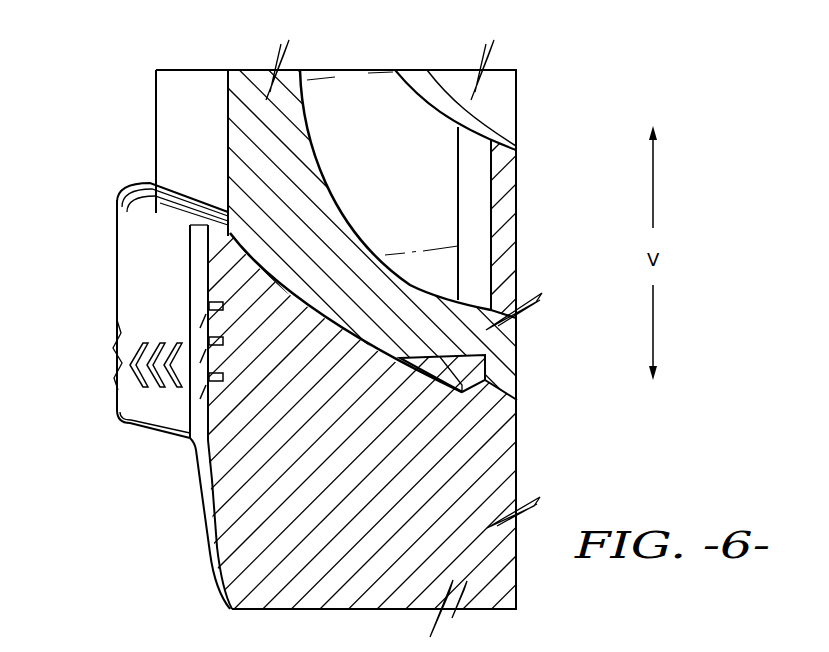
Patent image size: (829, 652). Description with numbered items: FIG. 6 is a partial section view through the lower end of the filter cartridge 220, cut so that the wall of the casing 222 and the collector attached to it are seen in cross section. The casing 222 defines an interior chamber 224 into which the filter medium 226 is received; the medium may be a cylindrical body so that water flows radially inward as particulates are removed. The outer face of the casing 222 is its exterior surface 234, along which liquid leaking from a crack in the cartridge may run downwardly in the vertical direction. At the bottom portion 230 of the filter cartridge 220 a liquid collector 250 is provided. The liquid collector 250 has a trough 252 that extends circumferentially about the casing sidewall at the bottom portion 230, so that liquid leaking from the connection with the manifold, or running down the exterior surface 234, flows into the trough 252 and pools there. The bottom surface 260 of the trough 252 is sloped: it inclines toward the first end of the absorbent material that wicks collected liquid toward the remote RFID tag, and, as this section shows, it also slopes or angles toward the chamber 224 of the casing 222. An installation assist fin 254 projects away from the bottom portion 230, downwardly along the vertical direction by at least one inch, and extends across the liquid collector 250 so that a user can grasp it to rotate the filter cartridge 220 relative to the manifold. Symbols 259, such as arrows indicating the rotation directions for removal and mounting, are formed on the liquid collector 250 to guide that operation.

The filter cartridge 220 is at (517, 70).
The casing 222 is at (180, 95).
The chamber 224 is at (357, 113).
The filter medium 226 is at (500, 105).
The bottom portion 230 is at (530, 378).
The exterior surface 234 is at (226, 97).
The liquid collector 250 is at (128, 253).
The trough 252 is at (153, 183).
The installation assist fin 254 is at (210, 553).
The symbols 259 is at (122, 344).
The bottom surface 260 is at (222, 222).